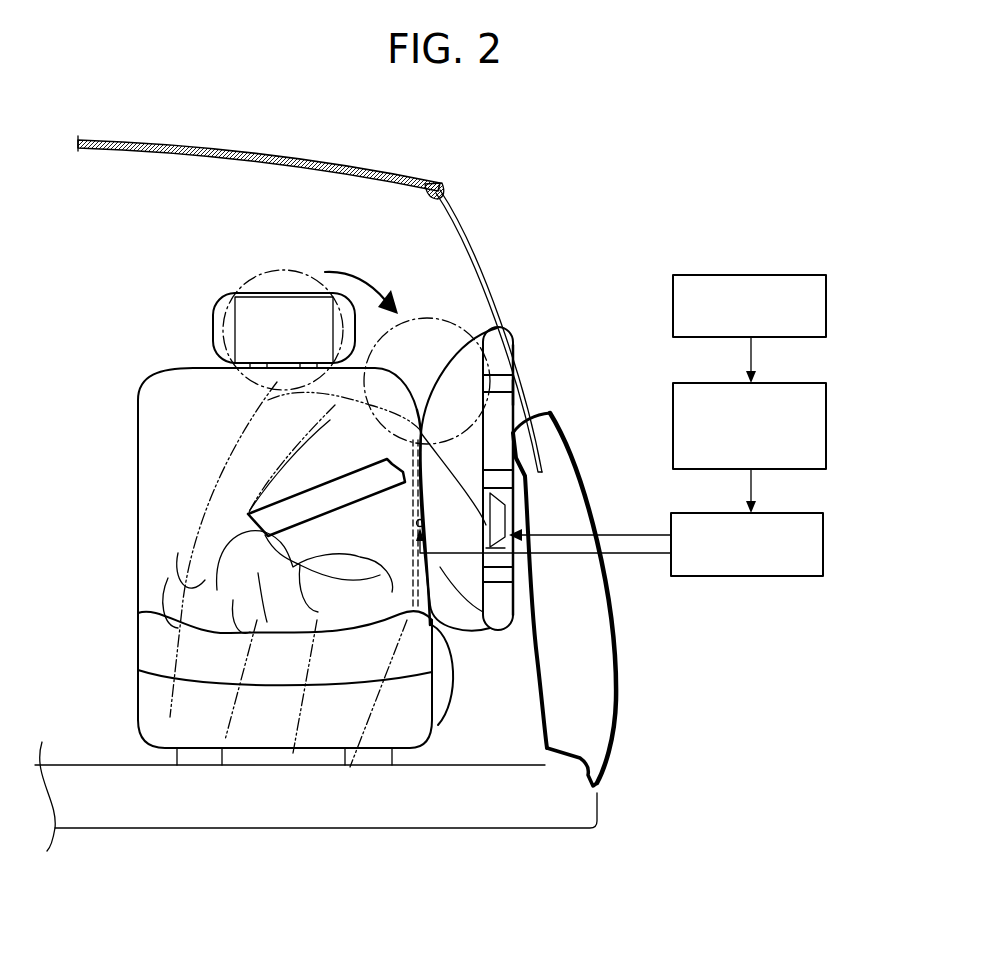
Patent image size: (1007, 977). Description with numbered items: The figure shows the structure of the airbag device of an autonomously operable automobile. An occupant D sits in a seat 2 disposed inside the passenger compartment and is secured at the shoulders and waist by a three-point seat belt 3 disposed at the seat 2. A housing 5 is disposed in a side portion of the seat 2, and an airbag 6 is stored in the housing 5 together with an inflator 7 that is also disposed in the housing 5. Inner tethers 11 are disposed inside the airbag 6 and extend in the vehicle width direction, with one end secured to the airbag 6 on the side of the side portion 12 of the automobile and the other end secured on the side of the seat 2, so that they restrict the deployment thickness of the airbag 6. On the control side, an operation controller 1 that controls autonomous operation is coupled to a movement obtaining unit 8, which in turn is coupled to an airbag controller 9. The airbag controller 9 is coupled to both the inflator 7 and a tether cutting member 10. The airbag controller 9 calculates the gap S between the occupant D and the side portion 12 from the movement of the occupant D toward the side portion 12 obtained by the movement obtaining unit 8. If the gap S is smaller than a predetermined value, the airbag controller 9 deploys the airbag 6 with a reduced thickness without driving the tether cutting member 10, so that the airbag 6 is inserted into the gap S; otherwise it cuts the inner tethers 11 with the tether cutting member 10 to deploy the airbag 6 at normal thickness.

The operation controller 1 is at (826, 296).
The seat 2 is at (205, 368).
The seat belt 3 is at (335, 478).
The housing 5 is at (413, 497).
The airbag 6 is at (498, 328).
The inflator 7 is at (416, 523).
The movement obtaining unit 8 is at (826, 418).
The airbag controller 9 is at (823, 540).
The tether cutting member 10 is at (505, 512).
The inner tether 11 is at (522, 471).
The side portion 12 is at (530, 365).
The gap S is at (518, 393).
The occupant D is at (258, 283).